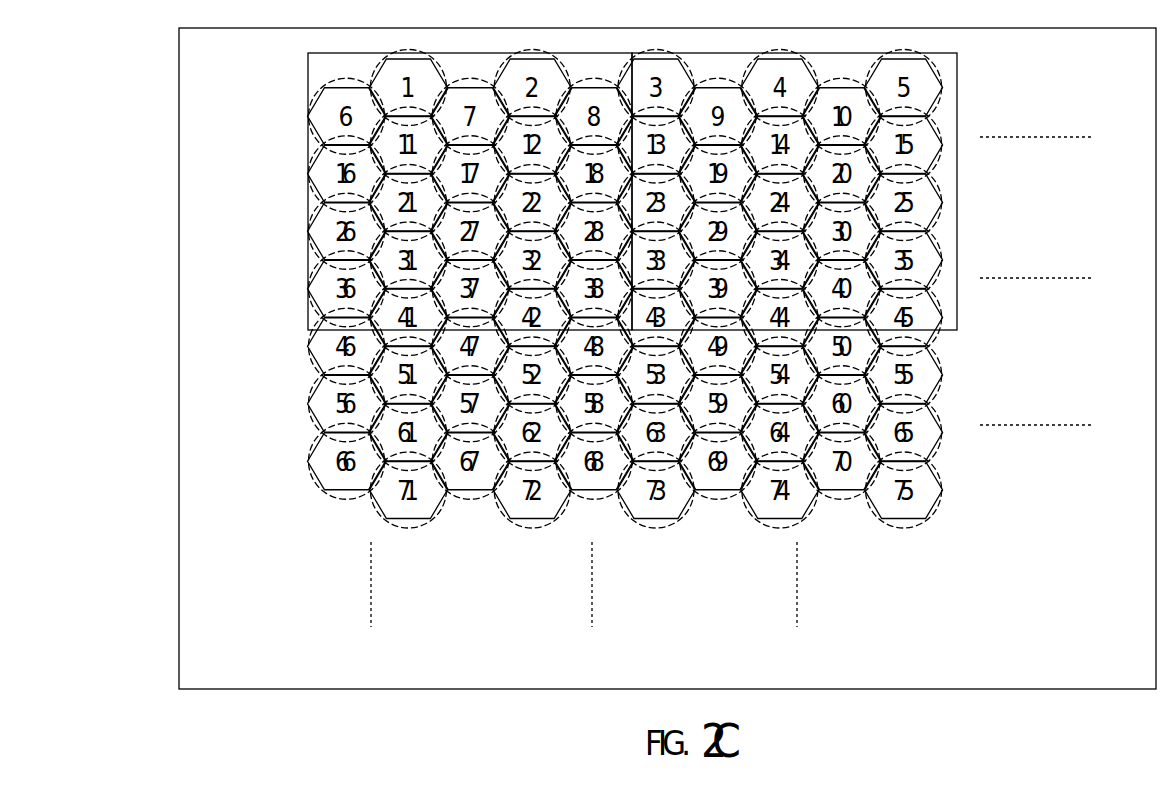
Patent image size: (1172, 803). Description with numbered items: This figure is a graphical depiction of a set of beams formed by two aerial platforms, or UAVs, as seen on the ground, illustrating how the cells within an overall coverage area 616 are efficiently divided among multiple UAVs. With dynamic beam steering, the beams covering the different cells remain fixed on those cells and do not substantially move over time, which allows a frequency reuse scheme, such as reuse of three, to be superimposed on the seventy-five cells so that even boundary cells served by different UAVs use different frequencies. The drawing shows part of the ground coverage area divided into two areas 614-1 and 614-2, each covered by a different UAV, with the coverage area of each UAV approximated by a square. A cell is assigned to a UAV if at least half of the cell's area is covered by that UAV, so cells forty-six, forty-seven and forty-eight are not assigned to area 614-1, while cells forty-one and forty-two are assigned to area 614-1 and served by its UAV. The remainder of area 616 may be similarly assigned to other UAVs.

The coverage area 616 is at (179, 360).
The coverage area 614-1 is at (308, 80).
The coverage area 614-2 is at (957, 125).